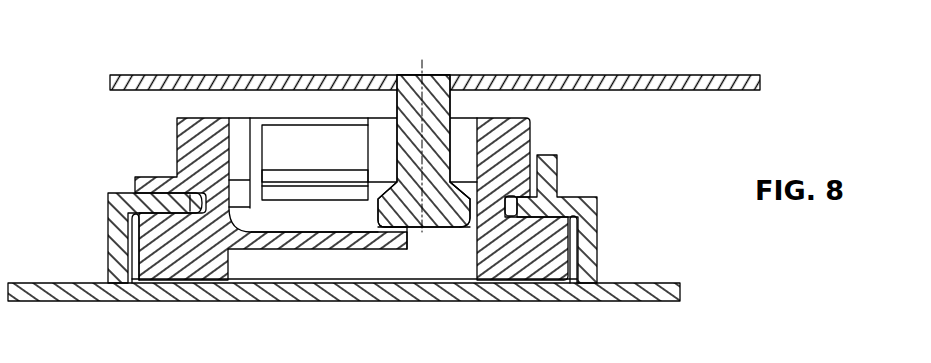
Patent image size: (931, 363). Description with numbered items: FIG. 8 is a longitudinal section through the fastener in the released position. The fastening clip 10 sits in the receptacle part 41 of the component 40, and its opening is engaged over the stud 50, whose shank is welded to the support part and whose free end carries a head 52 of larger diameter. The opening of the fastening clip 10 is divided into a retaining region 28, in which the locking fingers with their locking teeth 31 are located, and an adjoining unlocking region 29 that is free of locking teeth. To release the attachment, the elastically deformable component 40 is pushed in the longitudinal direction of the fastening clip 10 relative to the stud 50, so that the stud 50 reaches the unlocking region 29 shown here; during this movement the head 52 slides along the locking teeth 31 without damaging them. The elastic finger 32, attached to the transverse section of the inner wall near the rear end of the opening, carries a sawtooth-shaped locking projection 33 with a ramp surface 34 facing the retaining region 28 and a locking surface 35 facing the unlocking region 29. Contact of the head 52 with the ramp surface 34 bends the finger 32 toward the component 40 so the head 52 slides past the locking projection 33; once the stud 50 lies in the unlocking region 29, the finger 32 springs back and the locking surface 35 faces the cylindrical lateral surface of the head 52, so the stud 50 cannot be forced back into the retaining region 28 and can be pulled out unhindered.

The fastening clip 10 is at (176, 148).
The retaining region 28 is at (297, 212).
The unlocking region 29 is at (467, 143).
The locking teeth 31 is at (327, 182).
The elastic finger 32 is at (282, 252).
The locking projection 33 is at (400, 229).
The ramp surface 34 is at (345, 218).
The locking surface 35 is at (456, 228).
The component 40 is at (37, 282).
The receptacle part 41 is at (107, 233).
The stud 50 is at (433, 82).
The head 52 is at (452, 228).